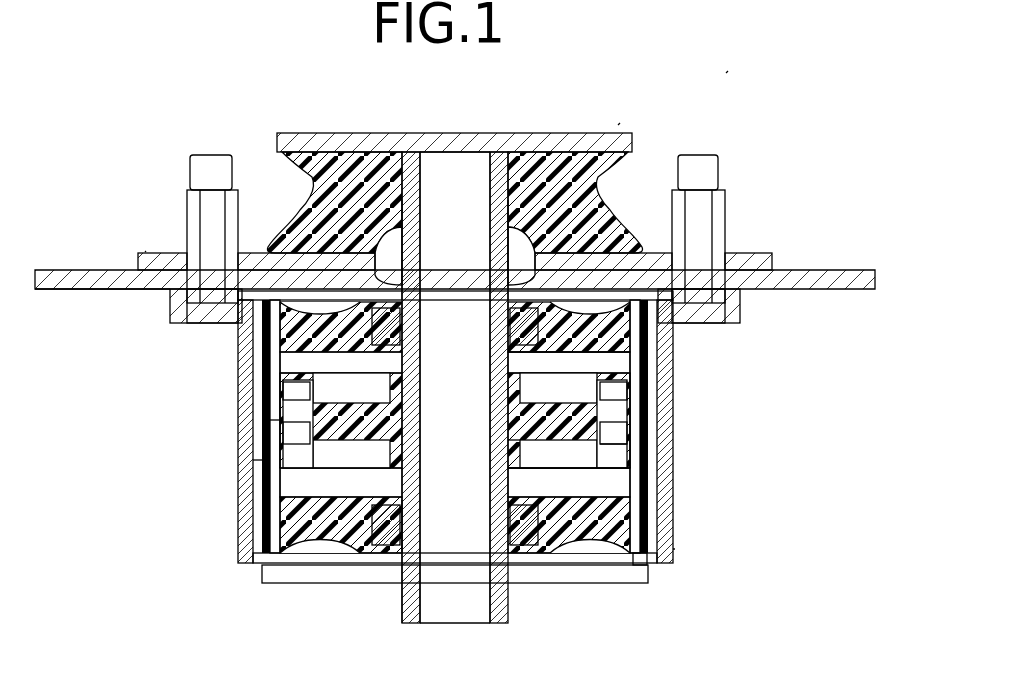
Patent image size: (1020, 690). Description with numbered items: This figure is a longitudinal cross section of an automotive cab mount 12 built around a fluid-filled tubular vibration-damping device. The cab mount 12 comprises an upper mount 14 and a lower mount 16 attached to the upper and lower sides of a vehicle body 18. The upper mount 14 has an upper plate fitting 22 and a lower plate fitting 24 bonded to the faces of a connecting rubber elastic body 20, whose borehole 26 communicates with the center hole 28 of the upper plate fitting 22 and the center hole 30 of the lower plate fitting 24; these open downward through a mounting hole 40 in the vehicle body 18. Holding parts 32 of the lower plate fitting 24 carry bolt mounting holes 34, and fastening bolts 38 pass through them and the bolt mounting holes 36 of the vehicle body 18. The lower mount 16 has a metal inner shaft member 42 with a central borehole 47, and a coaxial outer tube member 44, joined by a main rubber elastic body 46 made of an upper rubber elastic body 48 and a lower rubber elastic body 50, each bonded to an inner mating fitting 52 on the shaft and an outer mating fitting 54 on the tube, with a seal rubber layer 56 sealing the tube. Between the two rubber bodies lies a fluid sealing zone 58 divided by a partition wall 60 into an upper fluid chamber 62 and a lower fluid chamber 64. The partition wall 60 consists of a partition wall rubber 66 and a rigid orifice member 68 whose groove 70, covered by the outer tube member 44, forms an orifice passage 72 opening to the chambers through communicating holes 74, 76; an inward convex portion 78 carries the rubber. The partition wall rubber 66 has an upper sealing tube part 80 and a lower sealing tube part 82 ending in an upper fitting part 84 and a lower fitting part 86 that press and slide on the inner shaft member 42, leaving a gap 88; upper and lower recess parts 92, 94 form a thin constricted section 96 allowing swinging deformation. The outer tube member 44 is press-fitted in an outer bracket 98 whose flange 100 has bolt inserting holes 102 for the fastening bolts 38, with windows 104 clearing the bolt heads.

The automotive cab mount 12 is at (728, 70).
The upper mount 14 is at (620, 122).
The lower mount 16 is at (664, 500).
The vehicle body 18 is at (852, 280).
The connecting rubber elastic body 20 is at (348, 185).
The upper plate fitting 22 is at (550, 134).
The lower plate fitting 24 is at (145, 250).
The borehole 26 is at (420, 150).
The center hole 28 is at (490, 150).
The center hole 30 is at (520, 266).
The holding part 32 is at (160, 258).
The bolt mounting hole 34 is at (240, 258).
The bolt mounting hole 36 is at (213, 315).
The fastening bolt 38 is at (214, 167).
The mounting hole 40 is at (390, 292).
The inner shaft member 42 is at (506, 603).
The outer tube member 44 is at (272, 462).
The main rubber elastic body 46 is at (347, 568).
The borehole 47 is at (425, 588).
The upper rubber elastic body 48 is at (632, 362).
The lower rubber elastic body 50 is at (582, 522).
The inner mating fitting 52 is at (398, 325).
The outer mating fitting 54 is at (274, 345).
The seal rubber layer 56 is at (265, 498).
The fluid sealing zone 58 is at (260, 568).
The partition wall 60 is at (652, 410).
The upper fluid chamber 62 is at (276, 382).
The lower fluid chamber 64 is at (647, 558).
The partition wall rubber 66 is at (560, 522).
The orifice member 68 is at (258, 520).
The groove 70 is at (642, 390).
The orifice passage 72 is at (264, 442).
The communicating hole 74 is at (285, 393).
The communicating hole 76 is at (630, 452).
The inward convex portion 78 is at (515, 442).
The upper sealing tube part 80 is at (393, 392).
The lower sealing tube part 82 is at (393, 457).
The upper fitting part 84 is at (512, 364).
The lower fitting part 86 is at (522, 477).
The gap 88 is at (515, 398).
The upper recess part 92 is at (351, 388).
The lower recess part 94 is at (351, 454).
The constricted section 96 is at (558, 388).
The outer bracket 98 is at (676, 549).
The flange 100 is at (150, 290).
The bolt inserting hole 102 is at (195, 315).
The window 104 is at (268, 433).